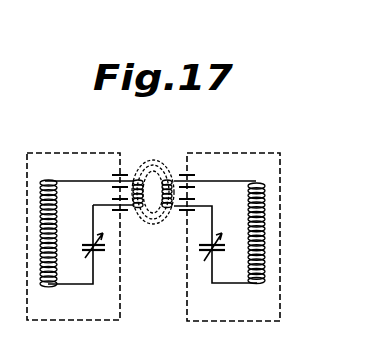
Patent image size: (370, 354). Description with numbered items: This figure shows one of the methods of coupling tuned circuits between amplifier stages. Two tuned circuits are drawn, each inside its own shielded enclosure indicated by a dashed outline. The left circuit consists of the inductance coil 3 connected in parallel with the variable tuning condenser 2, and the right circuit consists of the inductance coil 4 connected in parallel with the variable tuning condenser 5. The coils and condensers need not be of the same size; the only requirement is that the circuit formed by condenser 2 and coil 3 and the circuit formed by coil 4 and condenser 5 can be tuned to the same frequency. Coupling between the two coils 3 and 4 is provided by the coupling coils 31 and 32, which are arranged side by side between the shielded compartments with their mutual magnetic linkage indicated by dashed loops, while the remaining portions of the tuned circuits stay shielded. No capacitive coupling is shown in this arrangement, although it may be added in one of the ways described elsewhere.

The variable tuning condenser 2 is at (95, 253).
The inductance coil 3 is at (56, 220).
The inductance coil 4 is at (250, 214).
The variable tuning condenser 5 is at (218, 253).
The coupling coil 31 is at (140, 180).
The coupling coil 32 is at (166, 180).